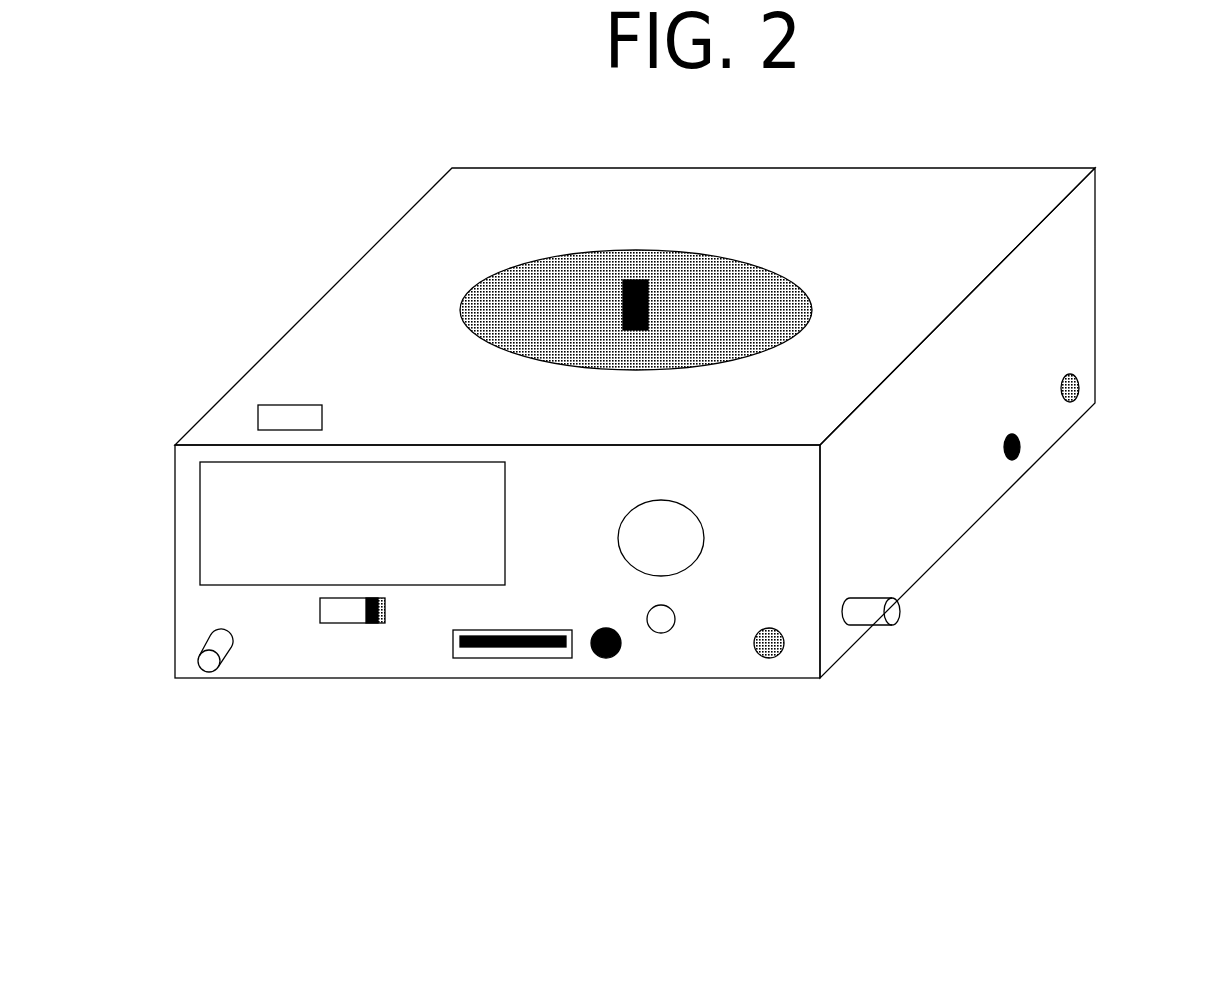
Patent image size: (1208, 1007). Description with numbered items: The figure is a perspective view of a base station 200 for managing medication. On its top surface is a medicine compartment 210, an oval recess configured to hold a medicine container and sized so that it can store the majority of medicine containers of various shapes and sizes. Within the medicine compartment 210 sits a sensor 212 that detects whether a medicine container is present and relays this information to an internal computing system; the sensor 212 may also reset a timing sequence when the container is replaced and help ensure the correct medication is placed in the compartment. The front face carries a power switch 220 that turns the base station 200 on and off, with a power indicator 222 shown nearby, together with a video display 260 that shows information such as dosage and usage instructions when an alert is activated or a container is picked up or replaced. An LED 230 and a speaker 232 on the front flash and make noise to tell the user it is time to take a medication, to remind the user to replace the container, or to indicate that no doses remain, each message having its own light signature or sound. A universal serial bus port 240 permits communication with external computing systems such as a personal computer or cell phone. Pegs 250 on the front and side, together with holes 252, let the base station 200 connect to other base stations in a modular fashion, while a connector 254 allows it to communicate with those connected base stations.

The base station 200 is at (256, 148).
The medicine compartment 210 is at (812, 312).
The sensor 212 is at (633, 282).
The power switch 220 is at (352, 625).
The sensor window 222 is at (258, 417).
The LED 230 is at (665, 632).
The speaker 232 is at (683, 572).
The universal serial bus (USB) port 240 is at (512, 658).
The pegs 250 is at (225, 657).
The holes 252 is at (782, 653).
The connector 254 is at (613, 657).
The video display 260 is at (385, 462).